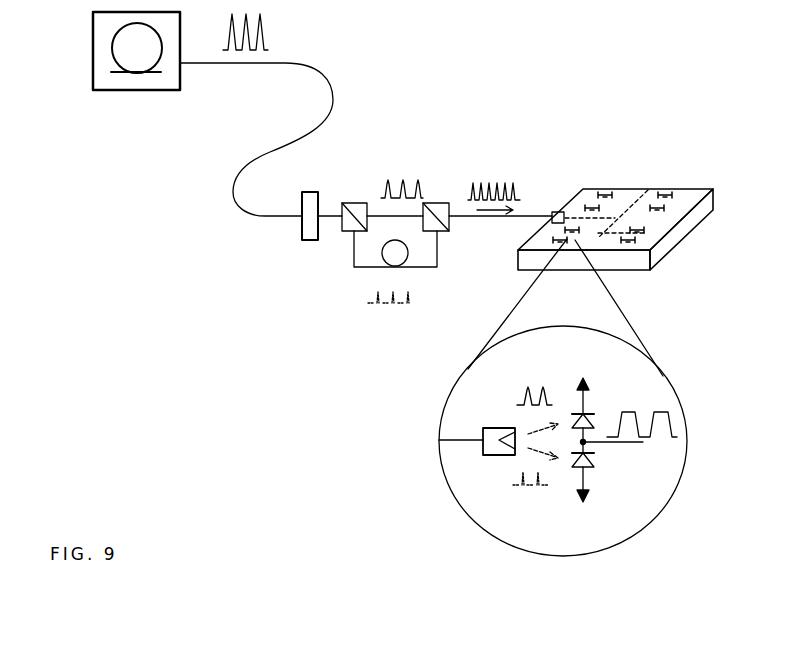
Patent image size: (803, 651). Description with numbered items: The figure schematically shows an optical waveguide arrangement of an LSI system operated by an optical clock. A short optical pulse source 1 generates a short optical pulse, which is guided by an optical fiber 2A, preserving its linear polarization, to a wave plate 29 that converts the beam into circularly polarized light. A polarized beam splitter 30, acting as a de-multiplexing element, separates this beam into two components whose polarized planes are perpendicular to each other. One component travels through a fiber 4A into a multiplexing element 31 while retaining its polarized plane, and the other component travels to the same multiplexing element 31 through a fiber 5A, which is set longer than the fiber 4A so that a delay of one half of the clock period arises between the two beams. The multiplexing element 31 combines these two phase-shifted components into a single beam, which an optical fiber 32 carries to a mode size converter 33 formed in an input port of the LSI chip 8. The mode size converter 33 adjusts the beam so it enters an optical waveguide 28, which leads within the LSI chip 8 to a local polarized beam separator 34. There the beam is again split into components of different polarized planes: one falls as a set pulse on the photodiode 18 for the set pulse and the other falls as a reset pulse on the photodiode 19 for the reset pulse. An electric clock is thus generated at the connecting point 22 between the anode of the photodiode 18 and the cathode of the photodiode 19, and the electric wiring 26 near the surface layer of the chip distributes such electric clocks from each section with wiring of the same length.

The short optical pulse source 1 is at (138, 90).
The optical fiber 2A is at (323, 78).
The fiber 4A is at (378, 215).
The fiber 5A is at (366, 268).
The wave plate 29 is at (299, 228).
The polarized beam splitter 30 is at (346, 232).
The multiplexing element 31 is at (450, 232).
The optical fiber 32 is at (527, 215).
The mode size converter 33 is at (562, 216).
The LSI chip 8 is at (637, 196).
The optical waveguide 28 is at (645, 203).
The electric wiring 26 is at (670, 210).
The local polarized beam separator 34 is at (507, 455).
The photodiode for the set pulse 18 is at (594, 418).
The connecting point 22 is at (585, 443).
The photodiode for the reset pulse 19 is at (594, 466).